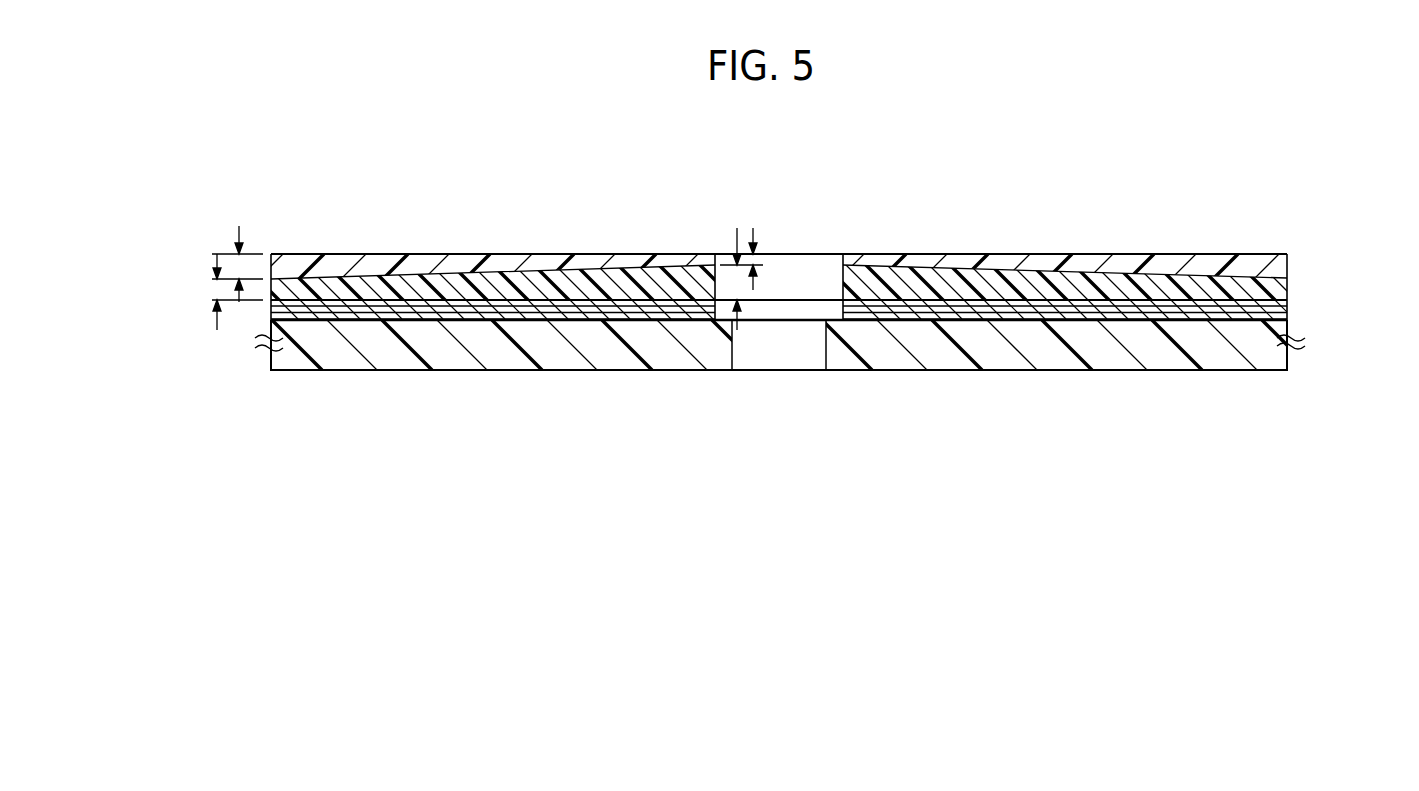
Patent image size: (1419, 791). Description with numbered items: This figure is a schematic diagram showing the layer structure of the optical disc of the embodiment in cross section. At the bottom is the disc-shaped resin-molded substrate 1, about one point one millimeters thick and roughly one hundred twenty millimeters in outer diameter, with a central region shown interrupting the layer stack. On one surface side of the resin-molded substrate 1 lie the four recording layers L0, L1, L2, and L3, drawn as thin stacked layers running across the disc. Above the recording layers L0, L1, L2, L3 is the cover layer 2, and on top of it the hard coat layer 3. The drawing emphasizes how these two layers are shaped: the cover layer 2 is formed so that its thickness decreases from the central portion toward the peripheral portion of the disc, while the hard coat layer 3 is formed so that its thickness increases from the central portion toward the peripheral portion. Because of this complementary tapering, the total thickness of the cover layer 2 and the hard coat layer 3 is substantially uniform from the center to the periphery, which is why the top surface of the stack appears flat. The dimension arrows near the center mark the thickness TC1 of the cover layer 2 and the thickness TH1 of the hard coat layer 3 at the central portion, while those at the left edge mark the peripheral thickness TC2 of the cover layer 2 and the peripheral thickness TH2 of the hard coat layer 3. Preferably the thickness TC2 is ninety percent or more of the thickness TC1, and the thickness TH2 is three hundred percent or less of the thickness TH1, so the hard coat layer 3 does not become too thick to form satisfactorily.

The resin-molded substrate 1 is at (1268, 363).
The cover layer 2 is at (1290, 288).
The hard coat layer 3 is at (1265, 262).
The recording layer L3 is at (1290, 300).
The recording layer L2 is at (1290, 308).
The recording layer L1 is at (1290, 314).
The recording layer L0 is at (1290, 320).
The thickness of the outer peripheral portion of the hard coat layer TH2 is at (238, 266).
The thickness of the outer peripheral portion of the cover layer TC2 is at (217, 288).
The thickness of the central portion of the hard coat layer TH1 is at (756, 262).
The thickness of the central portion of the cover layer TC1 is at (737, 282).